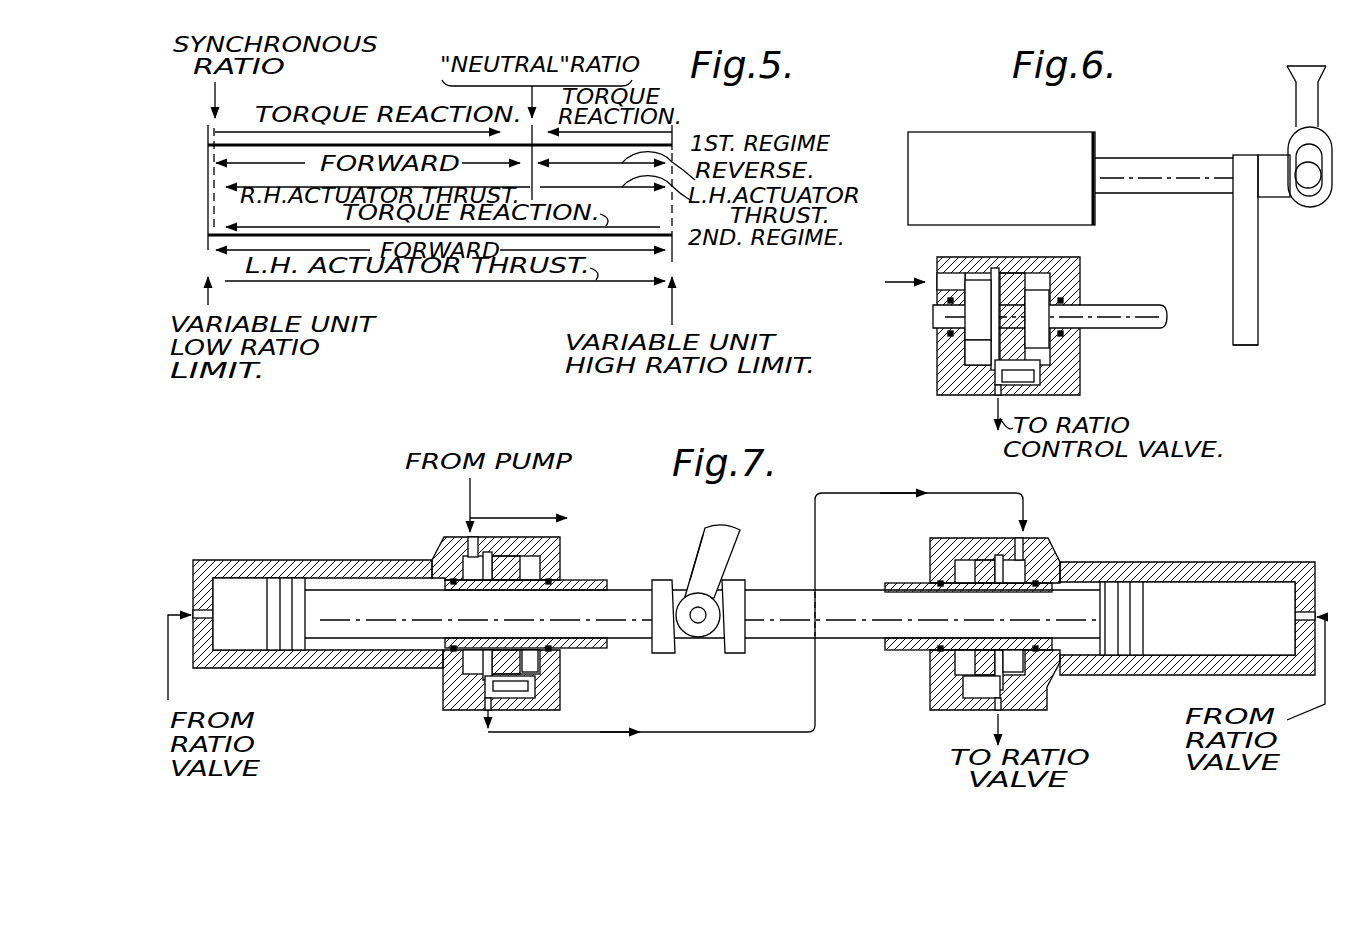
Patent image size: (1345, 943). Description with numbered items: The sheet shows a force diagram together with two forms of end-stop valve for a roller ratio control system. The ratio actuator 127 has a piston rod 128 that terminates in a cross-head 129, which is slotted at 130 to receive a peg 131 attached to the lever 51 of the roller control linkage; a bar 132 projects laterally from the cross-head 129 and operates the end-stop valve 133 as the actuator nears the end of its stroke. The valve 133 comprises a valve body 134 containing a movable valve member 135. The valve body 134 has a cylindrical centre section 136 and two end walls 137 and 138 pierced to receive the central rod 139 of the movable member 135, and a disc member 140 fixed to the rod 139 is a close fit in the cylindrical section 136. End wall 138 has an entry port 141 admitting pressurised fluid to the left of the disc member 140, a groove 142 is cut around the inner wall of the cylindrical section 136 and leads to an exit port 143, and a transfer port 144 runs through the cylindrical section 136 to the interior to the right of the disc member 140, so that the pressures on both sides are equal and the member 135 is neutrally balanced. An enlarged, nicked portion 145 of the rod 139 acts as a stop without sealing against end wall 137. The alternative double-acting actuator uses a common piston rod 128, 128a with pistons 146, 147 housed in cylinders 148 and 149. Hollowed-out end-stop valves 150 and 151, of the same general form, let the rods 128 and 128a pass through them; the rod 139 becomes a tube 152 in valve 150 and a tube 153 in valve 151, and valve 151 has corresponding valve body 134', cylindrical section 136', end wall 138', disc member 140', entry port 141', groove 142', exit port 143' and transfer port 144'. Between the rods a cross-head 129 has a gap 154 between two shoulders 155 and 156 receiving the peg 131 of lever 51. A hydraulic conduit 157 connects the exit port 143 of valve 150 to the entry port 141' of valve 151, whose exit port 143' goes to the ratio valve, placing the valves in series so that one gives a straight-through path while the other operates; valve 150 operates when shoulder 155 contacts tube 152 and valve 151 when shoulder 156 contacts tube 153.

In FIG. 6, the lever 51 is at (1300, 92).
In FIG. 7, the lever 51 is at (722, 558).
In FIG. 6, the ratio actuator 127 is at (1050, 147).
In FIG. 6, the piston rod 128 is at (1178, 168).
In FIG. 7, the piston rod 128 is at (372, 628).
In FIG. 7, the piston rod 128a is at (832, 607).
In FIG. 6, the cross-head 129 is at (1275, 212).
In FIG. 7, the cross-head 129 is at (700, 645).
In FIG. 6, the slot 130 is at (1300, 150).
In FIG. 6, the peg 131 is at (1302, 173).
In FIG. 7, the peg 131 is at (707, 634).
In FIG. 6, the bar 132 is at (1260, 300).
In FIG. 6, the end-stop valve 133 is at (1090, 388).
In FIG. 6, the valve body 134 is at (1047, 310).
In FIG. 7, the valve body 134 is at (541, 617).
In FIG. 6, the movable valve member 135 is at (985, 333).
In FIG. 6, the cylindrical centre section 136 is at (1044, 295).
In FIG. 7, the cylindrical centre section 136 is at (560, 577).
In FIG. 6, the end wall 137 is at (1068, 350).
In FIG. 6, the end wall 138 is at (920, 341).
In FIG. 7, the end wall 138 is at (458, 641).
In FIG. 6, the central rod 139 is at (935, 312).
In FIG. 6, the disc member 140 is at (933, 376).
In FIG. 7, the disc member 140 is at (574, 682).
In FIG. 6, the entry port 141 is at (925, 258).
In FIG. 7, the entry port 141 is at (443, 525).
In FIG. 6, the groove 142 is at (1001, 298).
In FIG. 7, the groove 142 is at (524, 580).
In FIG. 6, the exit port 143 is at (958, 400).
In FIG. 7, the exit port 143 is at (450, 703).
In FIG. 6, the transfer port 144 is at (970, 425).
In FIG. 7, the transfer port 144 is at (508, 733).
In FIG. 6, the enlarged portion 145 is at (1047, 298).
In FIG. 7, the piston 146 is at (282, 583).
In FIG. 7, the piston 147 is at (1138, 590).
In FIG. 7, the cylinder 148 is at (352, 562).
In FIG. 7, the cylinder 149 is at (1243, 562).
In FIG. 7, the end-stop valve 150 is at (572, 540).
In FIG. 7, the end-stop valve 151 is at (1056, 533).
In FIG. 7, the tube 152 is at (577, 580).
In FIG. 7, the tube 153 is at (885, 648).
In FIG. 7, the gap 154 is at (690, 562).
In FIG. 7, the shoulder 155 is at (663, 647).
In FIG. 7, the shoulder 156 is at (737, 650).
In FIG. 7, the hydraulic conduit 157 is at (575, 736).
In FIG. 7, the valve body 134' is at (945, 610).
In FIG. 7, the cylindrical centre section 136' is at (932, 584).
In FIG. 7, the end wall 138' is at (1041, 587).
In FIG. 7, the disc member 140' is at (934, 683).
In FIG. 7, the entry port 141' is at (989, 526).
In FIG. 7, the groove 142' is at (1057, 645).
In FIG. 7, the exit port 143' is at (940, 726).
In FIG. 7, the transfer port 144' is at (920, 723).